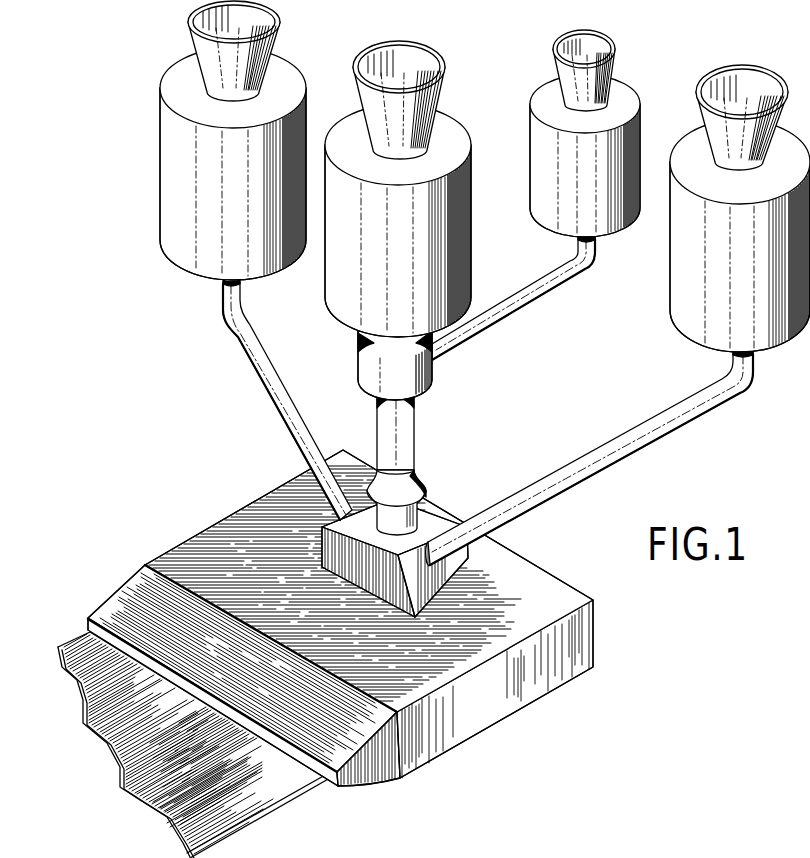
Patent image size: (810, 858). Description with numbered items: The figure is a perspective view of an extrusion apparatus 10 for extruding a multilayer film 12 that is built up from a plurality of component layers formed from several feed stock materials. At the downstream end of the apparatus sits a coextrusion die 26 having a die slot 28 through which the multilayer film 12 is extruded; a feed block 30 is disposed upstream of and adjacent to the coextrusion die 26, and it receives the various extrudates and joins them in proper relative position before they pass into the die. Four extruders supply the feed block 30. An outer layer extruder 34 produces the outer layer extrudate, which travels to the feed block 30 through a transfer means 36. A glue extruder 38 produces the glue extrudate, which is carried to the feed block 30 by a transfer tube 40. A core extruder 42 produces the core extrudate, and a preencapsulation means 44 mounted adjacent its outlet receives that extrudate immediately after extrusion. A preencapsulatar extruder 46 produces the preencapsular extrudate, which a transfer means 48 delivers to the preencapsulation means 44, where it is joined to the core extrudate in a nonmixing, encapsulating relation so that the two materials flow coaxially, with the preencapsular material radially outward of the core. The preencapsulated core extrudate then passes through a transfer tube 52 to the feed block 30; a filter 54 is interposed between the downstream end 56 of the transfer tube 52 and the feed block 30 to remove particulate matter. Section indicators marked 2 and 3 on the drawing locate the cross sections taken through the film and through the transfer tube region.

The extrusion apparatus 10 is at (741, 434).
The multilayer film 12 is at (259, 798).
The coextrusion die 26 is at (377, 618).
The die slot 28 is at (169, 676).
The feed block 30 is at (446, 512).
The outer layer extruder 34 is at (150, 85).
The transfer means 36 is at (221, 347).
The glue extruder 38 is at (660, 301).
The transfer tube 40 is at (667, 398).
The core extruder 42 is at (453, 112).
The preencapsulation means 44 is at (448, 381).
The preencapsulatar extruder 46 is at (641, 82).
The transfer means 48 is at (524, 325).
The transfer tube 52 is at (368, 416).
The filter 54 is at (432, 487).
The downstream end 56 is at (412, 460).
The section line 2- 2 is at (64, 628).
The section line 3- 3 is at (343, 357).